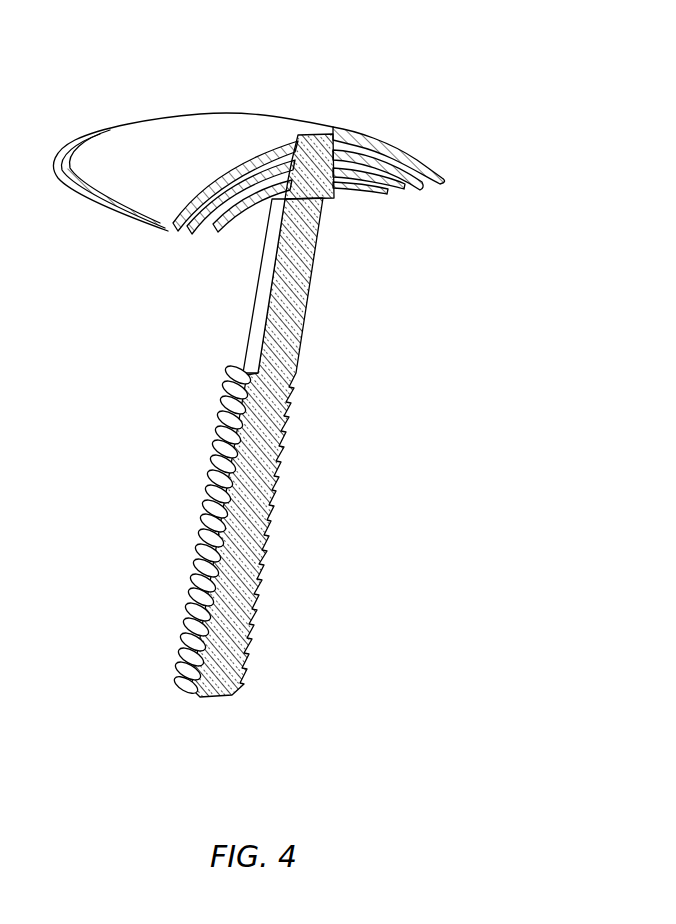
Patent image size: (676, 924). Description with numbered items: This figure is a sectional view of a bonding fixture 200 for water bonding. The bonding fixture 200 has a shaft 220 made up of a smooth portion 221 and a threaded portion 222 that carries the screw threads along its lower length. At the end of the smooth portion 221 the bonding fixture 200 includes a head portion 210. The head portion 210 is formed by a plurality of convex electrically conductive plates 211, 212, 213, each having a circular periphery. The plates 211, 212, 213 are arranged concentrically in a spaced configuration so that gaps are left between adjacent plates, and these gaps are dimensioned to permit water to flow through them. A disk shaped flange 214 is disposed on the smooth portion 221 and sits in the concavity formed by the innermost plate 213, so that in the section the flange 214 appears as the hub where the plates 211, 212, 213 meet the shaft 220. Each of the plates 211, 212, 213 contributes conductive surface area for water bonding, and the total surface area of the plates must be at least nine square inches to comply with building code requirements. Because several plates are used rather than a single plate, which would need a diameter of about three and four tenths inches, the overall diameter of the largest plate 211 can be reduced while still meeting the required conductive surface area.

The bonding fixture 200 is at (160, 308).
The head portion 210 is at (211, 93).
The convex electrically conductive plate 211 is at (450, 182).
The convex electrically conductive plate 212 is at (421, 190).
The convex electrically conductive plate 213 is at (389, 194).
The disk shaped flange 214 is at (336, 198).
The shaft 220 is at (350, 441).
The smooth portion 221 is at (305, 305).
The threads 222 is at (207, 520).